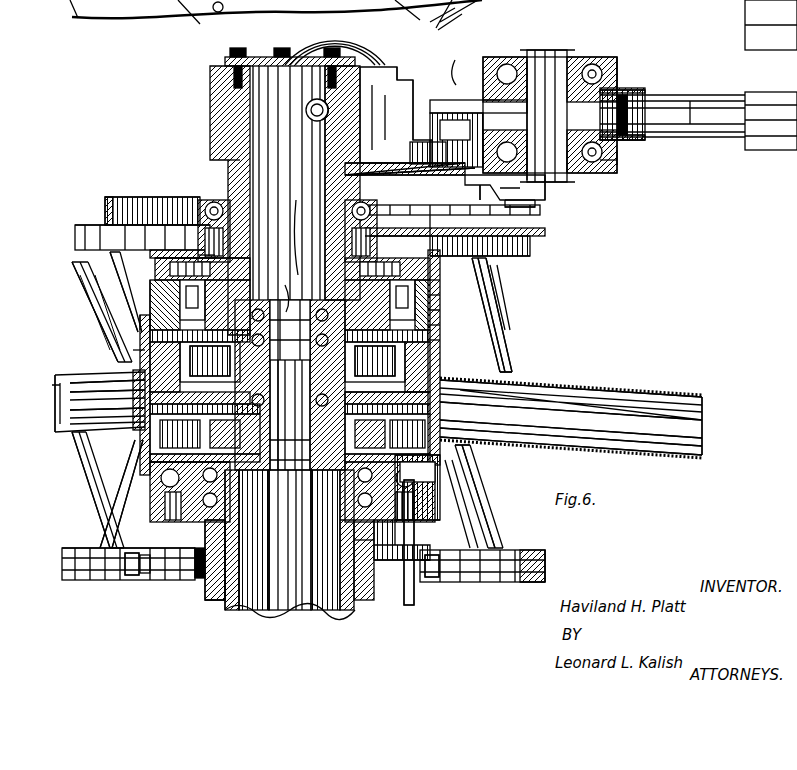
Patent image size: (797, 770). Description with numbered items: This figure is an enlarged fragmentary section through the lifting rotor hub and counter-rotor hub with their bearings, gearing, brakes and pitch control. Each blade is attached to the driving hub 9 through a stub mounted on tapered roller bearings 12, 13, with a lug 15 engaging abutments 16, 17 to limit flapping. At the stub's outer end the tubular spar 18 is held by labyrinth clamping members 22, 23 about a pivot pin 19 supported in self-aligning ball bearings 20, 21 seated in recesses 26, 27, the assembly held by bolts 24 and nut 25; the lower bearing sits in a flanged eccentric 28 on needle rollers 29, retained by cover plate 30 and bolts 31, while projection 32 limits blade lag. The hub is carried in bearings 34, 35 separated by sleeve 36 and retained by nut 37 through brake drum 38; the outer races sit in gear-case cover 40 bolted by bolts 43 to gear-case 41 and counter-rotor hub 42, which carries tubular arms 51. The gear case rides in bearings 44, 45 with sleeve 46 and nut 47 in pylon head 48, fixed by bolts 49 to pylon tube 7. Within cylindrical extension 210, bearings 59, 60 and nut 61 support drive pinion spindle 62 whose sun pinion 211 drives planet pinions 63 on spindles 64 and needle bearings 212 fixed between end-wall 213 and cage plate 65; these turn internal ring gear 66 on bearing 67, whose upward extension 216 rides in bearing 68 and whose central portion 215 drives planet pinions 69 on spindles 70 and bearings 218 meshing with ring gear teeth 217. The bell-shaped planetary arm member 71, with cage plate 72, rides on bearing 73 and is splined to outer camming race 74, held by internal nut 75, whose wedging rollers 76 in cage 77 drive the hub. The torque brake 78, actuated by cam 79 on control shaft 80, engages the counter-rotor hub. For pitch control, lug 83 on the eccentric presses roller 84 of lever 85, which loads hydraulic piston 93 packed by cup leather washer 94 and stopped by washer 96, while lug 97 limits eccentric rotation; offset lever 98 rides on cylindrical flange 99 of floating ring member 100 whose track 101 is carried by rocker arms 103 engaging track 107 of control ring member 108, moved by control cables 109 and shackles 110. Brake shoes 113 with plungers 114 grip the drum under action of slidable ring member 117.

The pylon tube 7 is at (212, 602).
The driving hub 9 is at (215, 122).
The tapered roller bearing 12 is at (230, 172).
The tapered roller bearing 13 is at (447, 63).
The lug 15 is at (403, 130).
The abutment 16 is at (400, 146).
The abutment 17 is at (395, 78).
The tubular spar 18 is at (690, 100).
The pivot pin 19 is at (540, 70).
The self-aligning ball bearing 20 is at (594, 72).
The self-aligning ball bearing 21 is at (588, 165).
The labyrinth clamping member 22 is at (625, 92).
The labyrinth clamping member 23 is at (635, 141).
The bolt 24 is at (289, 385).
The nut 25 is at (575, 168).
The cylindrical recess 26 is at (623, 70).
The cylindrical recess 27 is at (605, 163).
The flanged eccentric 28 is at (648, 150).
The needle rollers 29 is at (647, 150).
The cover plate 30 is at (617, 168).
The bolt 31 is at (460, 176).
The projection 32 is at (485, 98).
The radial ball bearing 34 is at (212, 204).
The combined radial and thrust ball bearing 35 is at (195, 255).
The spacing sleeve 36 is at (372, 230).
The nut 37 is at (422, 326).
The brake drum 38 is at (385, 252).
The gear-case cover 40 is at (160, 270).
The gear-case 41 is at (424, 342).
The counter-rotor hub 42 is at (518, 385).
The bolt 43 is at (160, 302).
The radial ball bearing 44 is at (447, 446).
The combined radial and thrust ball bearing 45 is at (420, 540).
The spacing sleeve 46 is at (432, 492).
The nut 47 is at (356, 542).
The pylon head 48 is at (205, 548).
The bolt 49 is at (406, 606).
The tubular arm 51 is at (640, 406).
The radial ball bearing 59 is at (424, 312).
The combined radial and thrust ball bearing 60 is at (322, 485).
The nut 61 is at (240, 602).
The drive pinion spindle 62 is at (266, 612).
The planet pinion 63 is at (107, 395).
The spindle 64 is at (150, 406).
The cage plate 65 is at (282, 358).
The internal ring gear 66 is at (520, 415).
The radial ball bearing 67 is at (138, 470).
The radial ball bearing 68 is at (281, 288).
The planet pinion 69 is at (118, 356).
The planet pinion spindle 70 is at (165, 300).
The bell-shaped planetary arm member 71 is at (482, 300).
The cage plate 72 is at (136, 356).
The radial ball bearing 73 is at (207, 361).
The outer camming race 74 is at (426, 298).
The internal nut 75 is at (428, 284).
The wedging rollers 76 is at (375, 361).
The cage 77 is at (428, 224).
The torque brake 78 is at (120, 506).
The rotatable cam 79 is at (500, 462).
The control shaft 80 is at (420, 602).
The lug 83 is at (490, 202).
The roller 84 is at (560, 185).
The lever 85 is at (548, 200).
The hydraulic piston 93 is at (312, 100).
The cup leather washer 94 is at (310, 110).
The washer 96 is at (312, 118).
The lug 97 is at (410, 172).
The offset lever 98 is at (440, 170).
The cylindrical flange 99 is at (105, 205).
The floating ring member 100 is at (110, 240).
The double flanged cylindrical track 101 is at (540, 235).
The rocker arm 103 is at (92, 262).
The double flanged cylindrical track 107 is at (546, 561).
The control ring member 108 is at (505, 584).
The control cable 109 is at (200, 572).
The shackle 110 is at (145, 576).
The brake shoe 113 is at (432, 258).
The plunger 114 is at (242, 2).
The slidable ring member 117 is at (162, 510).
The cylindrical extension 210 is at (212, 602).
The sun pinion 211 is at (290, 464).
The needle roller bearing 212 is at (140, 452).
The lower horizontal end-wall 213 is at (500, 447).
The central portion 215 is at (387, 378).
The upward extension 216 is at (297, 233).
The internal ring gear teeth 217 is at (497, 342).
The needle roller bearing 218 is at (495, 320).